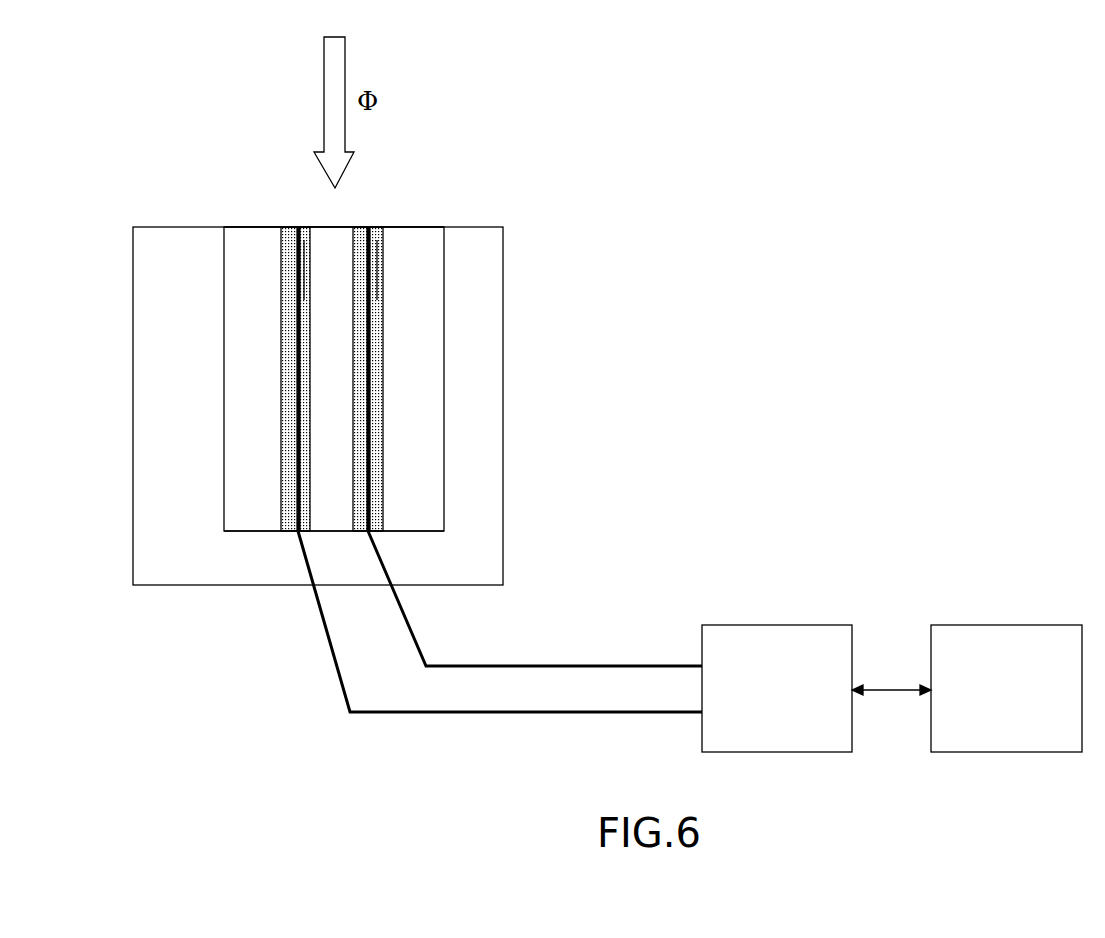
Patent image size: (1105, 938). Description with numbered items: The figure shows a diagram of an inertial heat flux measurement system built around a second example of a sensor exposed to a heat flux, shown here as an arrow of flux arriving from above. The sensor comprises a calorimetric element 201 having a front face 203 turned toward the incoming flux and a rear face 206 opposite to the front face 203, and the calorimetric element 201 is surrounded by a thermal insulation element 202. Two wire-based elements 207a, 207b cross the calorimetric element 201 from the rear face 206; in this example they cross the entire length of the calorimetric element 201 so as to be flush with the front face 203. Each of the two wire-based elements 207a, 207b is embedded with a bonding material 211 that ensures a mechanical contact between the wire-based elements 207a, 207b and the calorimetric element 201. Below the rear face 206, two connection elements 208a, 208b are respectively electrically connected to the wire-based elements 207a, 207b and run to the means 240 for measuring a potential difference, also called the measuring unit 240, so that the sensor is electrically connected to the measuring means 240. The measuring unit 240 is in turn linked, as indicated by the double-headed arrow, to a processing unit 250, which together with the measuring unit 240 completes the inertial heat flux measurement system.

The calorimetric element 201 is at (444, 412).
The thermal insulation element 202 is at (503, 487).
The front face 203 is at (407, 225).
The rear face 206 is at (258, 534).
The wire-based element 207a is at (297, 353).
The wire-based element 207b is at (372, 350).
The connection element 208a is at (338, 688).
The connection element 208b is at (415, 632).
The bonding material 211 is at (306, 263).
The means for measuring a potential difference 240 is at (778, 625).
The processing unit 250 is at (1008, 625).